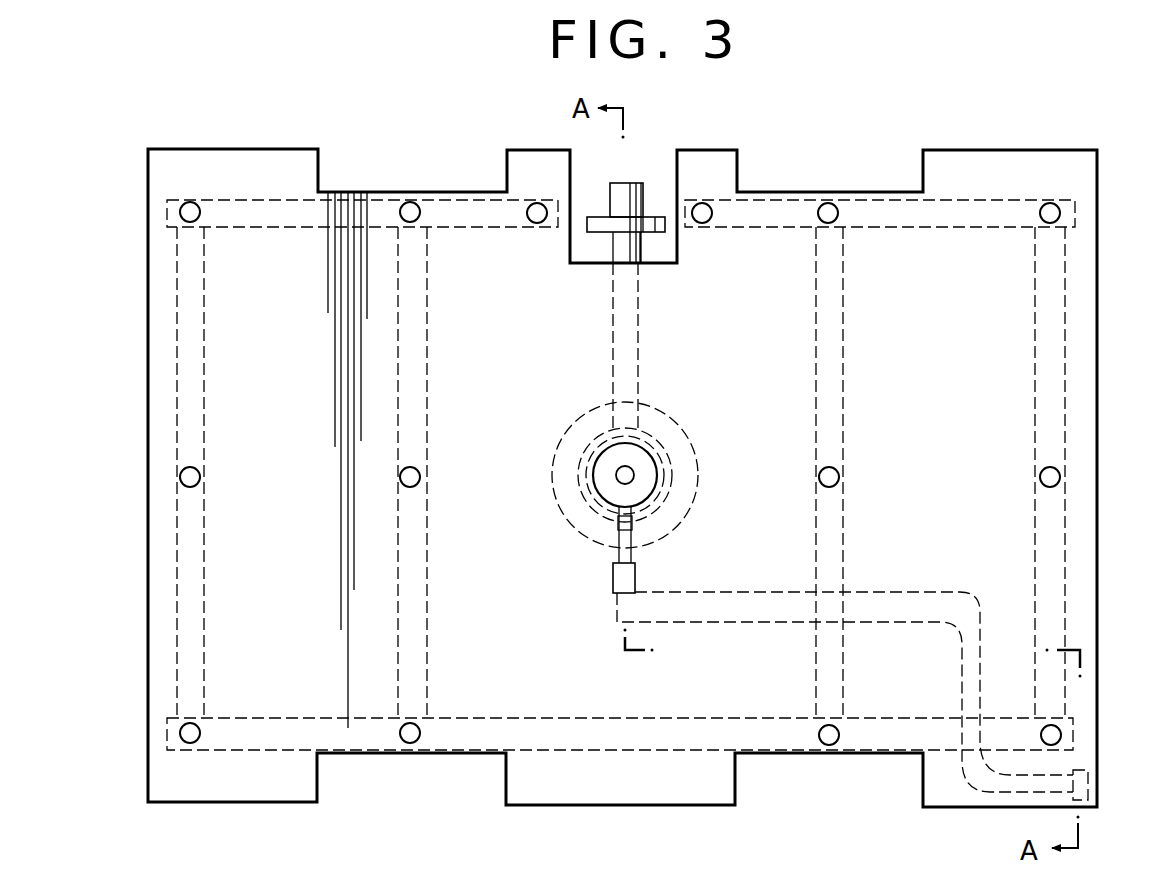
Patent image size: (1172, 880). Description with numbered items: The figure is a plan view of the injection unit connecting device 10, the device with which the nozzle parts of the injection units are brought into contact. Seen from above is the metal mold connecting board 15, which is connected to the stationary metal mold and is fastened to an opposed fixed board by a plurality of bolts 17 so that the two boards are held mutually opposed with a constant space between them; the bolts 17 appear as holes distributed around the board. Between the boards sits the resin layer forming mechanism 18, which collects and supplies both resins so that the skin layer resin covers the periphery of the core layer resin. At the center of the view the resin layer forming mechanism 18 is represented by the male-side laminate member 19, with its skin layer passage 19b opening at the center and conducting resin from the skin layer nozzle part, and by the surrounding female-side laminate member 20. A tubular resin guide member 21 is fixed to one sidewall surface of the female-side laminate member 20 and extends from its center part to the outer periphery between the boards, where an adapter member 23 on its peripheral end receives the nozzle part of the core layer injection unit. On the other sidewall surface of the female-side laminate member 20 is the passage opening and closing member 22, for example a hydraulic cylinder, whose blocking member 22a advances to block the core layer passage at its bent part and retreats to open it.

The injection unit connecting device 10 is at (1083, 145).
The metal mold connecting board 15 is at (1088, 190).
The bolts 17 is at (838, 216).
The resin layer forming mechanism 18 is at (665, 405).
The male-side laminate member 19 is at (640, 455).
The skin layer passage 19b is at (633, 475).
The female-side laminate member 20 is at (686, 497).
The resin guide member 21 is at (640, 317).
The passage opening and closing member 22 is at (617, 585).
The blocking member 22a is at (619, 546).
The adapter member 23 is at (625, 195).